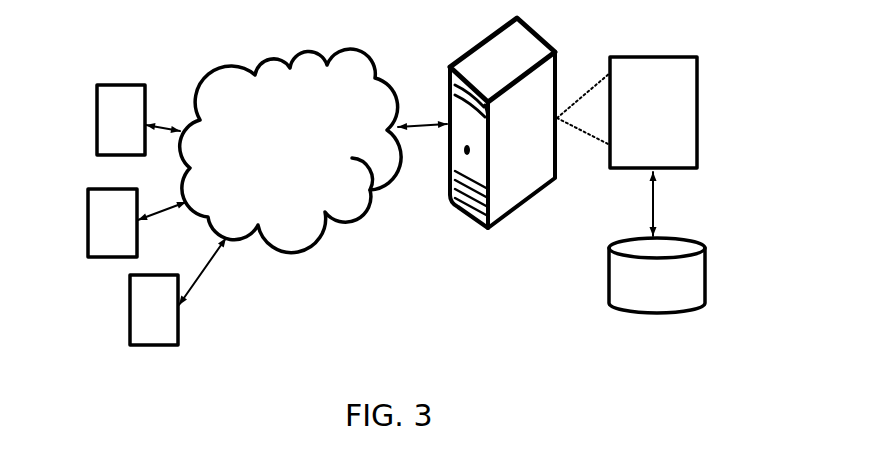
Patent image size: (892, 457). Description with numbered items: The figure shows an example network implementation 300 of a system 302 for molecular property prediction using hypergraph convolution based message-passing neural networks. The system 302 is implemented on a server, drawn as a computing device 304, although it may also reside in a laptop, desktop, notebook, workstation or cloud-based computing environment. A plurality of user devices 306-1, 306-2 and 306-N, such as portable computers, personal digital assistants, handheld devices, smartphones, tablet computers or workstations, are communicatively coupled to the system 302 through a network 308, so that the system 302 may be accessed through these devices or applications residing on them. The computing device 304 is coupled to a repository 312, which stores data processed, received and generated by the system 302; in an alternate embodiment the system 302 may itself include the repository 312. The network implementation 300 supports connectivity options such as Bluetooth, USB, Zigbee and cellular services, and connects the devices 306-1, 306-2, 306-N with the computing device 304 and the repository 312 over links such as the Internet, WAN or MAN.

The network implementation 300 is at (385, 275).
The system 302 is at (633, 57).
The computing device 304 is at (553, 50).
The device 306-1 is at (120, 84).
The device 306-2 is at (113, 258).
The device 306-N is at (152, 346).
The network 308 is at (290, 151).
The repository 312 is at (605, 275).